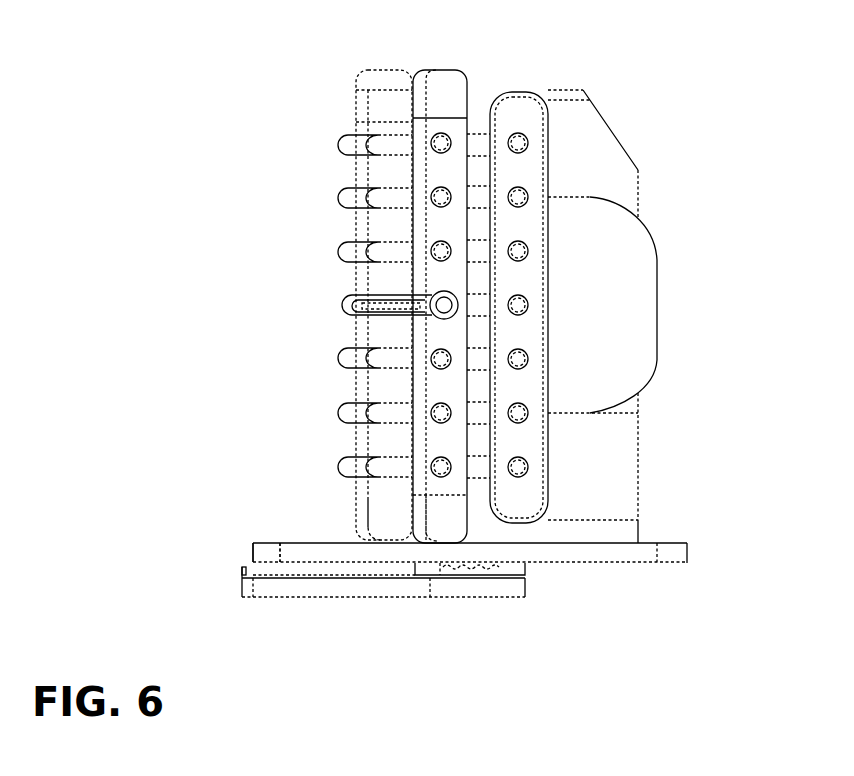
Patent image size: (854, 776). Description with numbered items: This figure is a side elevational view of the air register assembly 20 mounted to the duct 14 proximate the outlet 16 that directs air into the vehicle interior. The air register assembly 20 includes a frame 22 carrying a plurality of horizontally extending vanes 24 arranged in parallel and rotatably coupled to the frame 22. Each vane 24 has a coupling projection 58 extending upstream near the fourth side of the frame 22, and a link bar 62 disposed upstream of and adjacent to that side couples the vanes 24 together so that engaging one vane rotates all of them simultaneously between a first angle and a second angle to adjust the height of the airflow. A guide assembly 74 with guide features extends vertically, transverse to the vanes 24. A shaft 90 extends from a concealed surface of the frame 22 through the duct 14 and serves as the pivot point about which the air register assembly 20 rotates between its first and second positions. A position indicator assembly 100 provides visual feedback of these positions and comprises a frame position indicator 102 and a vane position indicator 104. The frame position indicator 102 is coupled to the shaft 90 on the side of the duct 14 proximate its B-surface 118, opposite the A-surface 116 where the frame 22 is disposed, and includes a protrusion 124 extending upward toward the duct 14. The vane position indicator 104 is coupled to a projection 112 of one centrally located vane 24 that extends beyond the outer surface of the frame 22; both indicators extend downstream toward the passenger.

The air register assembly 20 is at (705, 100).
The frame 22 is at (467, 72).
The vane 24 is at (350, 245).
The coupling projection 58 is at (477, 148).
The link bar 62 is at (513, 110).
The guide assembly 74 is at (600, 100).
The shaft 90 is at (500, 568).
The position indicator assembly 100 is at (500, 603).
The frame position indicator 102 is at (372, 590).
The vane position indicator 104 is at (351, 303).
The projection 112 is at (458, 296).
The duct 14 is at (677, 552).
The outlet 16 is at (255, 545).
The A-surface 116 is at (307, 543).
The B-surface 118 is at (306, 625).
The protrusion 124 is at (243, 567).